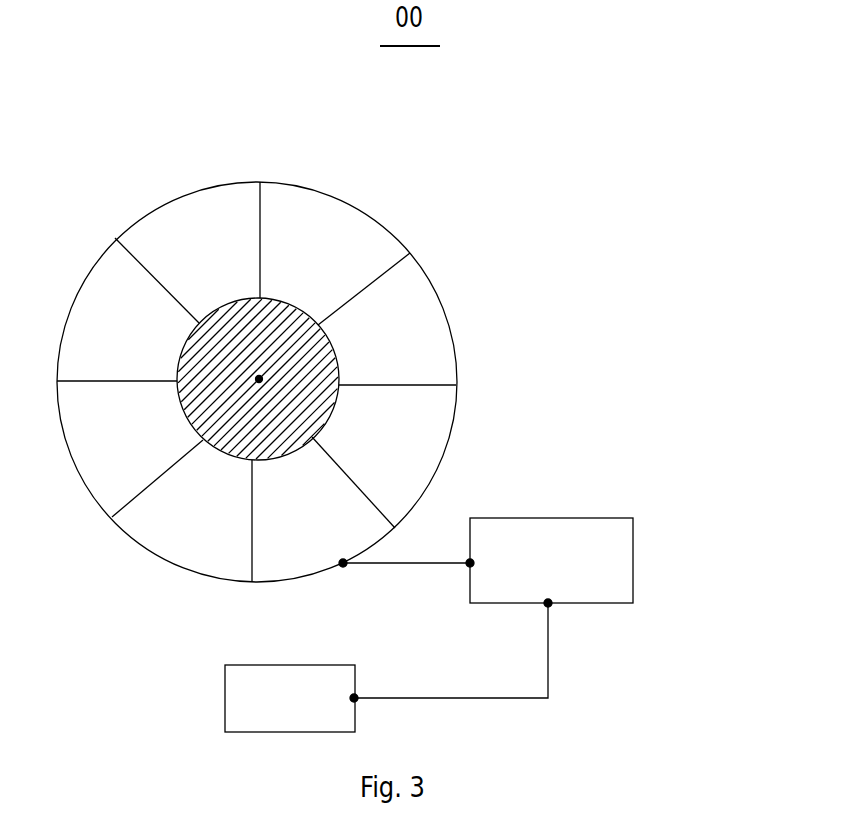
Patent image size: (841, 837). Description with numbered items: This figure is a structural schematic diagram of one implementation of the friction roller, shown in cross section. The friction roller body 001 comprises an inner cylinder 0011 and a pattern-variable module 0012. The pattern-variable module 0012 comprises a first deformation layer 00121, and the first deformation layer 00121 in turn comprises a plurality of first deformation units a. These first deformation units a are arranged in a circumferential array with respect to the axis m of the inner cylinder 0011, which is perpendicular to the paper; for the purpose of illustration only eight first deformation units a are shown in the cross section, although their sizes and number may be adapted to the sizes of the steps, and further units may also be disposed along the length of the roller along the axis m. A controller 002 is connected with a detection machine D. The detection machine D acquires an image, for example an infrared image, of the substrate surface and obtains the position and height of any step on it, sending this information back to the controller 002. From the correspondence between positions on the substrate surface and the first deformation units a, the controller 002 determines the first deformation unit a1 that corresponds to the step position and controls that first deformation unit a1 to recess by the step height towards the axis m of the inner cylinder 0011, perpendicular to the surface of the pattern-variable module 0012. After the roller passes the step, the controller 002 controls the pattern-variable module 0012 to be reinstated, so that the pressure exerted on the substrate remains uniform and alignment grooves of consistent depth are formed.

The friction roller body 001 is at (547, 165).
The inner cylinder 0011 is at (333, 341).
The pattern-variable module 0012 is at (612, 262).
The first deformation layer 00121 is at (517, 385).
The first deformation units a is at (457, 348).
The first deformation unit corresponding to the step position a1 is at (163, 557).
The axis of the inner cylinder m is at (259, 379).
The controller 002 is at (593, 518).
The detection machine D is at (280, 665).